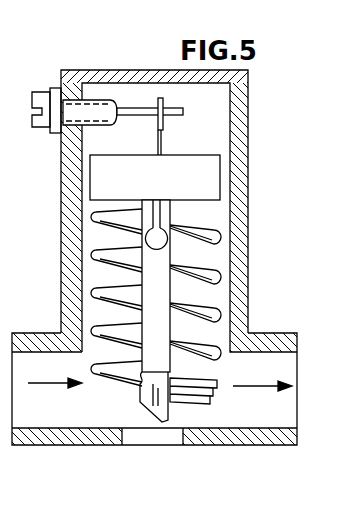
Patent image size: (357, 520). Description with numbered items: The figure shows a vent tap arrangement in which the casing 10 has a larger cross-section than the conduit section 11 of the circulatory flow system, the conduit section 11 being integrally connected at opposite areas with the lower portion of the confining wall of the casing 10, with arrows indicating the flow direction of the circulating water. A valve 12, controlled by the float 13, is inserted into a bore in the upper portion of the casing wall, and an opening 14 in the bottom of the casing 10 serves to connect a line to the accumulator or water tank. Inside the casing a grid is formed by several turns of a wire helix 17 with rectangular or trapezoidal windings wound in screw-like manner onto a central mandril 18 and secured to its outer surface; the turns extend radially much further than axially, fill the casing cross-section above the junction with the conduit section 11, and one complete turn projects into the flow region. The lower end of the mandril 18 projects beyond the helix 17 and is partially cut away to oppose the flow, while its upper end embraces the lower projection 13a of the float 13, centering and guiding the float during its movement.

The casing 10 is at (67, 196).
The conduit section 11 is at (33, 333).
The valve 12 is at (95, 118).
The float 13 is at (162, 186).
The lower projection 13a is at (172, 212).
The opening 14 is at (136, 436).
The wire helix 17 is at (218, 317).
The mandril 18 is at (160, 257).